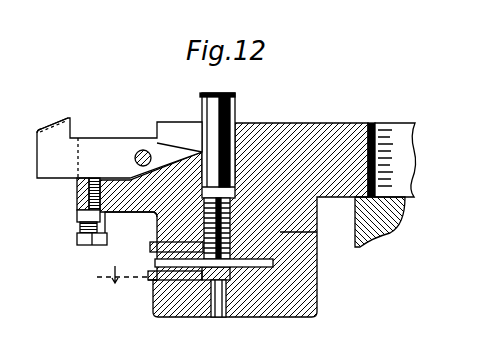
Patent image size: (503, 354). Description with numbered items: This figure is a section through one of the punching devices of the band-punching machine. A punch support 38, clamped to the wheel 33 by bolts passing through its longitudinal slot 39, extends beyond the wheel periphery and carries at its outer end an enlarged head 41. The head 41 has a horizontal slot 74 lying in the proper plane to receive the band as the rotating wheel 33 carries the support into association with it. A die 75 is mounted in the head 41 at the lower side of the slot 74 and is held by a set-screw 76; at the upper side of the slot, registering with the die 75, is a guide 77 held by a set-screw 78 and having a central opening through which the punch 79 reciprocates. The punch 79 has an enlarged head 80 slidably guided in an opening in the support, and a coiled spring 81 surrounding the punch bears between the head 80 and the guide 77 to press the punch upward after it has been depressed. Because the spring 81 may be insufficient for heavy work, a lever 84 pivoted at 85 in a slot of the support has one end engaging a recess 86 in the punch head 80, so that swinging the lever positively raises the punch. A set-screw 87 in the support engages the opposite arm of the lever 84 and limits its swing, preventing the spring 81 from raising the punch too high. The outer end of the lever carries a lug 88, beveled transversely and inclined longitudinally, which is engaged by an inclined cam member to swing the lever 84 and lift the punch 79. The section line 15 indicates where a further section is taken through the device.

The section line 15 is at (109, 279).
The wheel 33 is at (381, 235).
The punch support 38 is at (417, 152).
The longitudinal slot 39 is at (364, 137).
The enlarged head 41 is at (318, 294).
The horizontal slot 74 is at (236, 283).
The die 75 is at (240, 280).
The set-screw 76 is at (148, 279).
The guide 77 is at (152, 243).
The set-screw 78 is at (156, 256).
The punch 79 is at (317, 232).
The enlarged head 80 is at (236, 111).
The coiled spring 81 is at (143, 220).
The lever 84 is at (110, 131).
The pivot 85 is at (144, 149).
The recess 86 is at (198, 117).
The set-screw 87 is at (77, 240).
The lug 88 is at (57, 128).